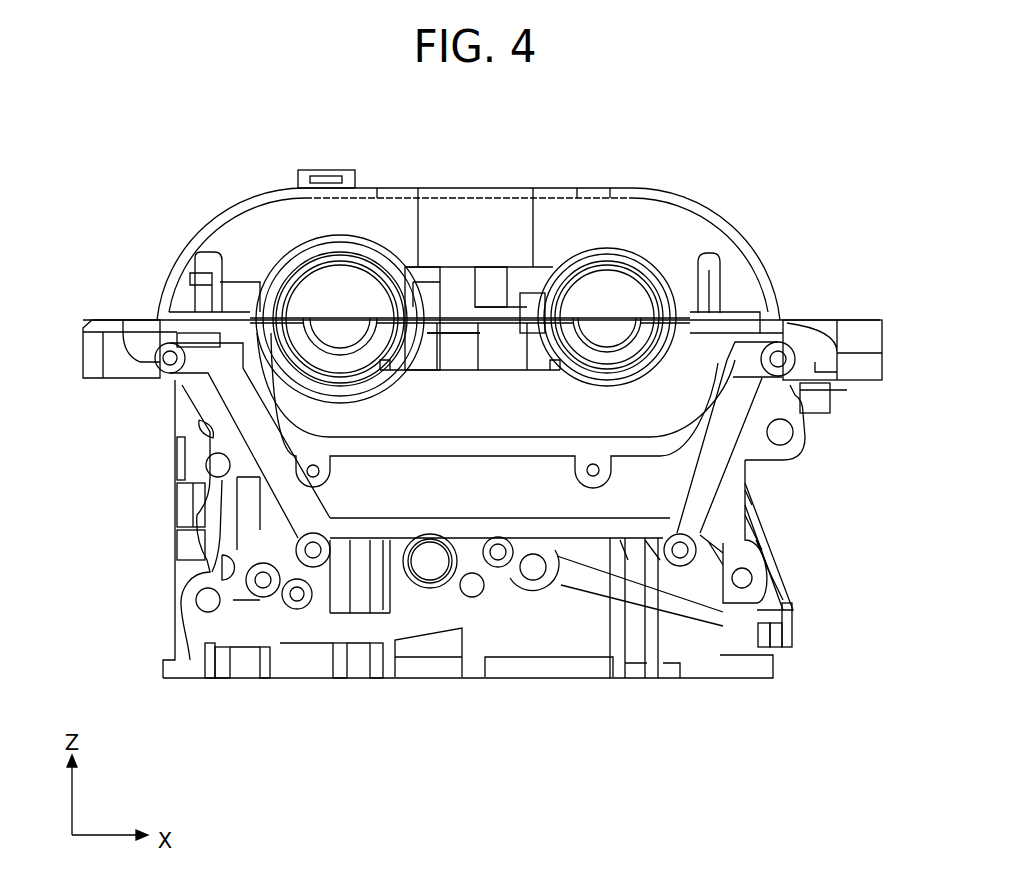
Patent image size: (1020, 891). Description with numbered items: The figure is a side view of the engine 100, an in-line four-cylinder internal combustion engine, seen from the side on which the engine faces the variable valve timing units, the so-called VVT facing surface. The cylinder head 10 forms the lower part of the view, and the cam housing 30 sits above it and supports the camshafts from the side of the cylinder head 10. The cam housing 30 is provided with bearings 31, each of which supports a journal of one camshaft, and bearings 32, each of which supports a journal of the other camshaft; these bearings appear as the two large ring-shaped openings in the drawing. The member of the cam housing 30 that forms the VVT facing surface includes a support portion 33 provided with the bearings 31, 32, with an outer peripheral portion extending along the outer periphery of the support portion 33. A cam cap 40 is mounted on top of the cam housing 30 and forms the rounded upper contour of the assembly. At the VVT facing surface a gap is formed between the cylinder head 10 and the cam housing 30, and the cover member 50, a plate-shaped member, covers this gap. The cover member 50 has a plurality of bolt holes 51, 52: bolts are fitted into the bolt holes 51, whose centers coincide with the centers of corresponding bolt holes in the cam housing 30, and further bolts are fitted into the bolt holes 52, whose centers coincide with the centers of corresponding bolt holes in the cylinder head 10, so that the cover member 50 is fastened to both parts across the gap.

The cylinder head 10 is at (783, 566).
The cam housing 30 is at (811, 319).
The bearings 31 is at (590, 350).
The bearings 32 is at (328, 352).
The support portion 33 is at (472, 402).
The cam cap 40 is at (657, 196).
The cover member 50 is at (420, 497).
The bolt holes 51 is at (163, 366).
The bolt holes 52 is at (307, 562).
The engine 100 is at (756, 229).